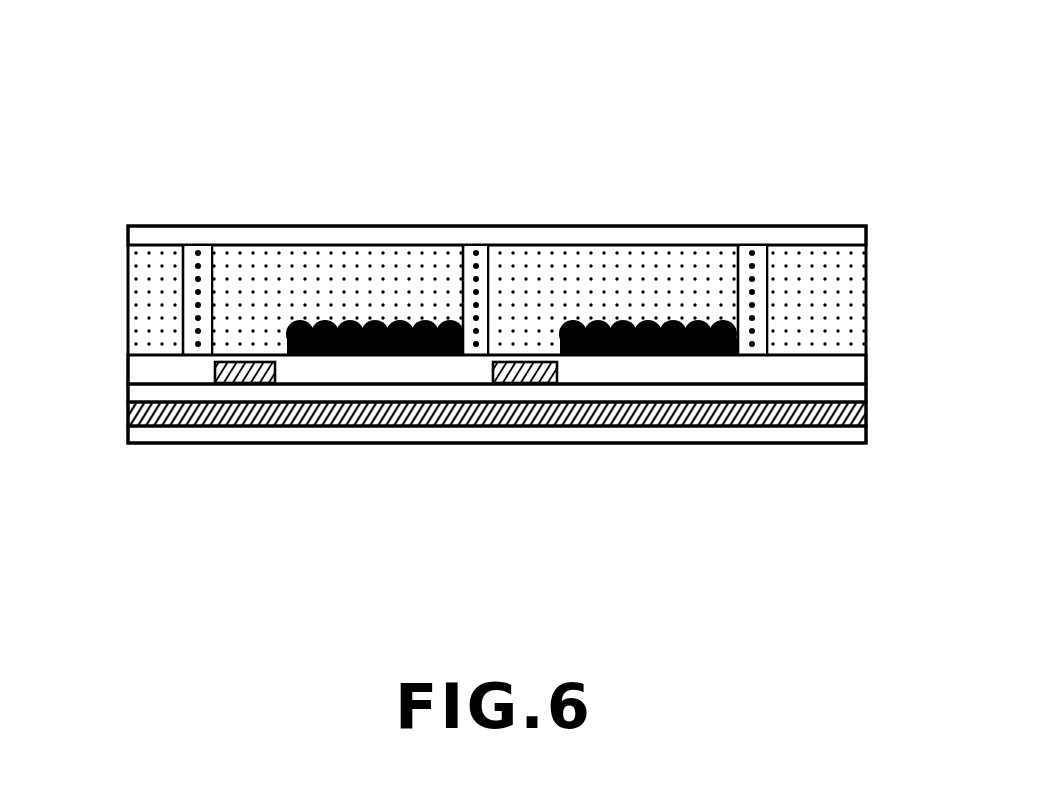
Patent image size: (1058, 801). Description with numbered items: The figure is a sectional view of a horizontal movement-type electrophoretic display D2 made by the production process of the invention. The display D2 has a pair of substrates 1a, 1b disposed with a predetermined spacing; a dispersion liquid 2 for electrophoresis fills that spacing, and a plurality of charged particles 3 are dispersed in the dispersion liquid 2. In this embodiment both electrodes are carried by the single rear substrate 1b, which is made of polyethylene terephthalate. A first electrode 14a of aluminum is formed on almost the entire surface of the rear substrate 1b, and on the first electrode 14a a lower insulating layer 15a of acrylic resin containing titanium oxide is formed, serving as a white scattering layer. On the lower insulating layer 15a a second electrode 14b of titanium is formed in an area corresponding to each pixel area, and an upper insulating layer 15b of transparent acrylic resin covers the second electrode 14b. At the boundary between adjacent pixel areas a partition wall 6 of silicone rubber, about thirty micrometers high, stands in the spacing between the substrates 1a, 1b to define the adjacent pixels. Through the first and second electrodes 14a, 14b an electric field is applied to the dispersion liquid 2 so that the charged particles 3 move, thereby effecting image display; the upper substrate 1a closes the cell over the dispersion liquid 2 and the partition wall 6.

The electrophoretic display D2 is at (793, 143).
The substrate 1a is at (565, 235).
The rear substrate 1b is at (520, 443).
The dispersion liquid 2 is at (292, 313).
The charged particles 3 is at (404, 322).
The partition wall 6 is at (750, 332).
The first electrode 14a is at (672, 426).
The second electrode 14b is at (240, 384).
The lower insulating layer 15a is at (155, 392).
The upper insulating layer 15b is at (143, 365).